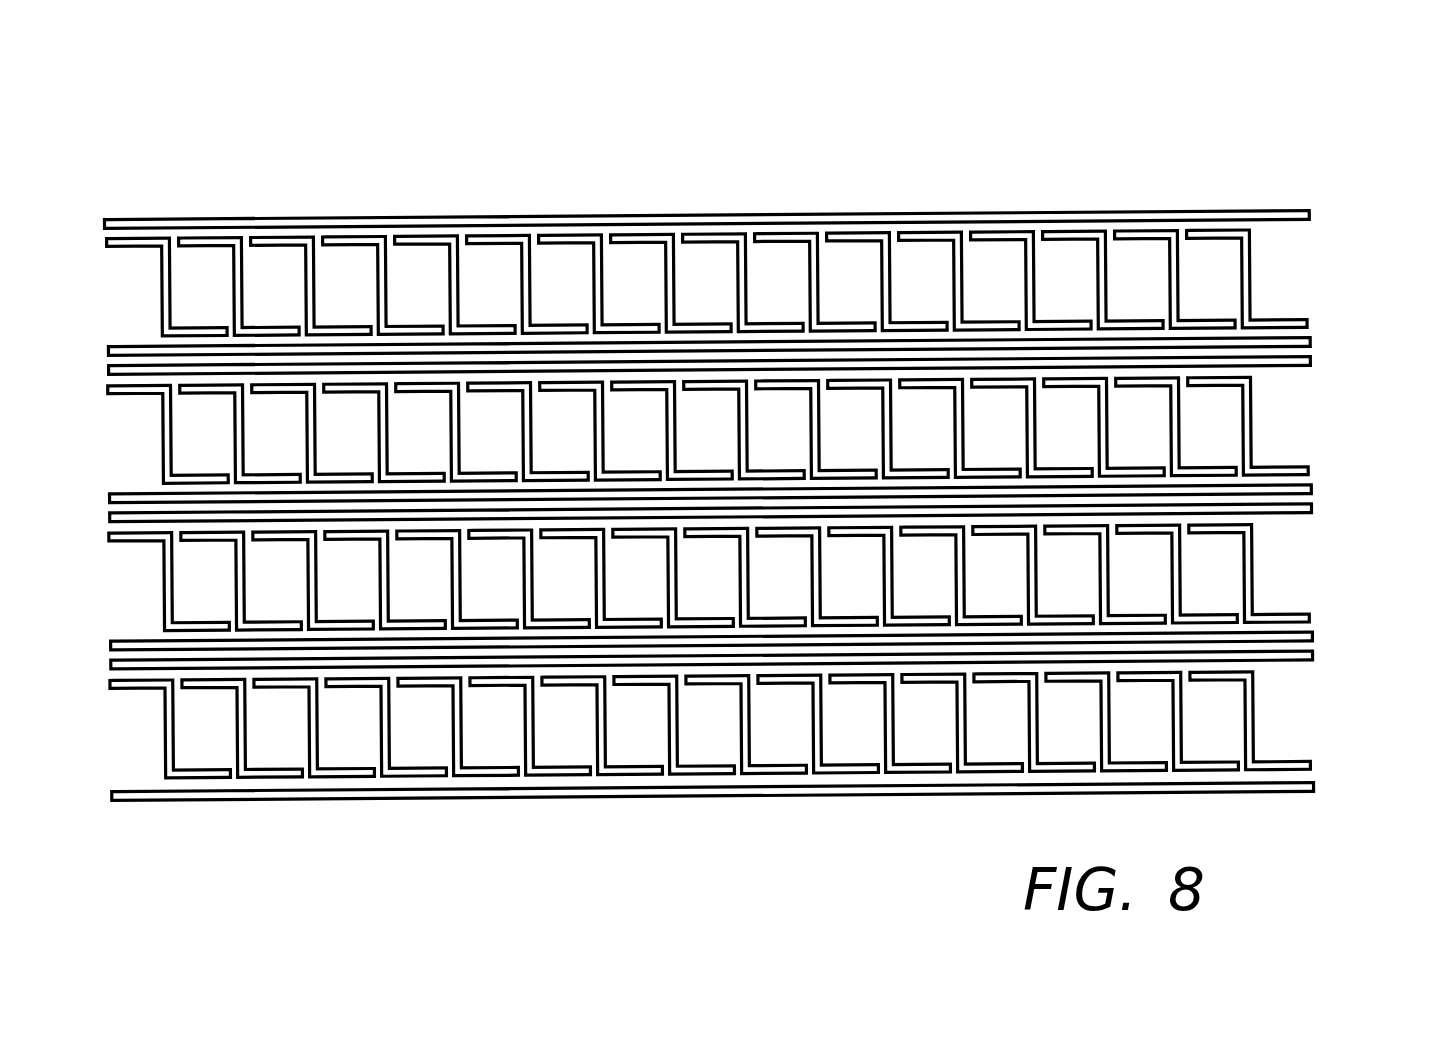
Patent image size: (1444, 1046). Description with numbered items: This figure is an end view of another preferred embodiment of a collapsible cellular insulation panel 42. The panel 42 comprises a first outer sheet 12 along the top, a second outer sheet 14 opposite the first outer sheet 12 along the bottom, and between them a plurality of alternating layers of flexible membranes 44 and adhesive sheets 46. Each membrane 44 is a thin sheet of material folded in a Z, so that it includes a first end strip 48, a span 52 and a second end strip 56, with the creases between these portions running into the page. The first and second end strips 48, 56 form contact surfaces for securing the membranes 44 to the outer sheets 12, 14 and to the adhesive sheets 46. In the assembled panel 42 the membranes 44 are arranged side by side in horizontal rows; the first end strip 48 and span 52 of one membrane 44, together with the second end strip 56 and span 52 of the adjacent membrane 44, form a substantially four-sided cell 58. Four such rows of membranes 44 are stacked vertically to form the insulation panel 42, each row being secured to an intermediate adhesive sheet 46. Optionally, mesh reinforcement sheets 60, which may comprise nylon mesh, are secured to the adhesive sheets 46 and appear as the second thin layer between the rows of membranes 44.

The first outer sheet 12 is at (711, 218).
The second outer sheet 14 is at (815, 792).
The collapsible cellular insulation panel 42 is at (1220, 118).
The flexible membrane 44 is at (752, 471).
The adhesive sheet 46 is at (1308, 342).
The first end strip 48 is at (497, 383).
The span 52 is at (481, 471).
The second end strip 56 is at (483, 483).
The four-sided cell 58 is at (481, 471).
The mesh reinforcement sheet 60 is at (1308, 360).